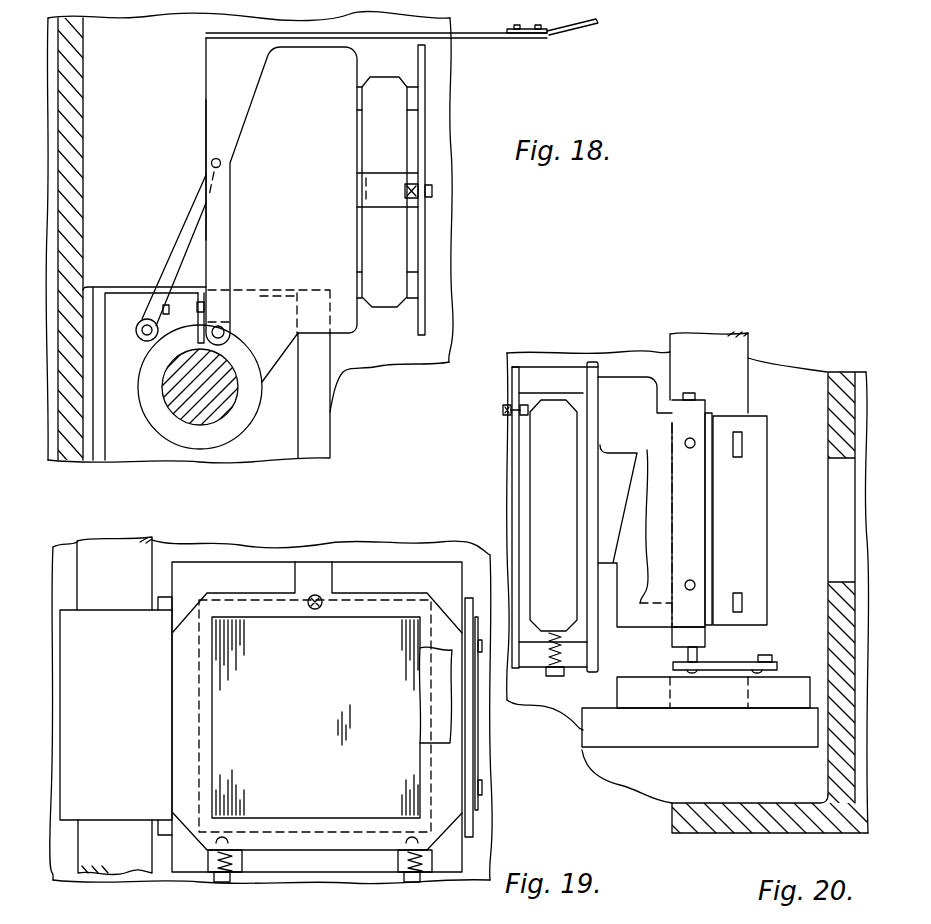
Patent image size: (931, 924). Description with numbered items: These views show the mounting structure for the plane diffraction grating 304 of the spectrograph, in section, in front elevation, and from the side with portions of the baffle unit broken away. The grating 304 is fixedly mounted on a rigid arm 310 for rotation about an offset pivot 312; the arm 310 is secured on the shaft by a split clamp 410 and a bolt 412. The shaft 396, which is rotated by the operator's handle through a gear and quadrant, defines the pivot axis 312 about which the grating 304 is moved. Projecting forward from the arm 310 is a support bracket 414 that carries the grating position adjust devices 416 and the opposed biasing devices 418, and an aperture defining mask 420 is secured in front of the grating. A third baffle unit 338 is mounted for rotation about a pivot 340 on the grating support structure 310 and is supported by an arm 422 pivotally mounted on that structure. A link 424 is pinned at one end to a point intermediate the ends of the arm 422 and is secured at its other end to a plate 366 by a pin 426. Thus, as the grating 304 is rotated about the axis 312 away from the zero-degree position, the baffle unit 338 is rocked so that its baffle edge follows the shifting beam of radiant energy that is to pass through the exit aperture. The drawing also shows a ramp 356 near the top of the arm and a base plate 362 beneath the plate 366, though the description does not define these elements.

In FIG. 18, the plane diffraction grating 304 is at (393, 136).
In FIG. 19, the plane diffraction grating 304 is at (270, 692).
In FIG. 20, the plane diffraction grating 304 is at (548, 468).
In FIG. 18, the rigid arm 310 is at (272, 72).
In FIG. 20, the rigid arm 310 is at (630, 382).
In FIG. 18, the offset pivot 312 is at (205, 395).
In FIG. 18, the third baffle unit 338 is at (497, 38).
In FIG. 19, the third baffle unit 338 is at (477, 730).
In FIG. 20, the third baffle unit 338 is at (690, 428).
In FIG. 18, the pivot 340 is at (224, 337).
In FIG. 18, the ramp 356 is at (600, 27).
In FIG. 20, the base plate 362 is at (740, 831).
In FIG. 18, the plate 366 is at (273, 440).
In FIG. 20, the plate 366 is at (680, 735).
In FIG. 18, the shaft 396 is at (170, 400).
In FIG. 19, the shaft 396 is at (118, 556).
In FIG. 20, the shaft 396 is at (722, 336).
In FIG. 18, the split clamp 410 is at (183, 303).
In FIG. 18, the bolt 412 is at (205, 307).
In FIG. 19, the support bracket 414 is at (232, 561).
In FIG. 20, the support bracket 414 is at (592, 362).
In FIG. 19, the grating position adjust devices 416 is at (220, 884).
In FIG. 20, the grating position adjust devices 416 is at (551, 680).
In FIG. 18, the opposed biasing devices 418 is at (433, 192).
In FIG. 19, the opposed biasing devices 418 is at (315, 595).
In FIG. 20, the opposed biasing devices 418 is at (506, 408).
In FIG. 18, the aperture defining mask 420 is at (426, 262).
In FIG. 19, the aperture defining mask 420 is at (405, 590).
In FIG. 20, the aperture defining mask 420 is at (515, 440).
In FIG. 18, the arm 422 is at (208, 114).
In FIG. 20, the arm 422 is at (690, 628).
In FIG. 18, the link 424 is at (205, 188).
In FIG. 20, the link 424 is at (735, 675).
In FIG. 18, the pin 426 is at (143, 319).
In FIG. 20, the pin 426 is at (770, 656).